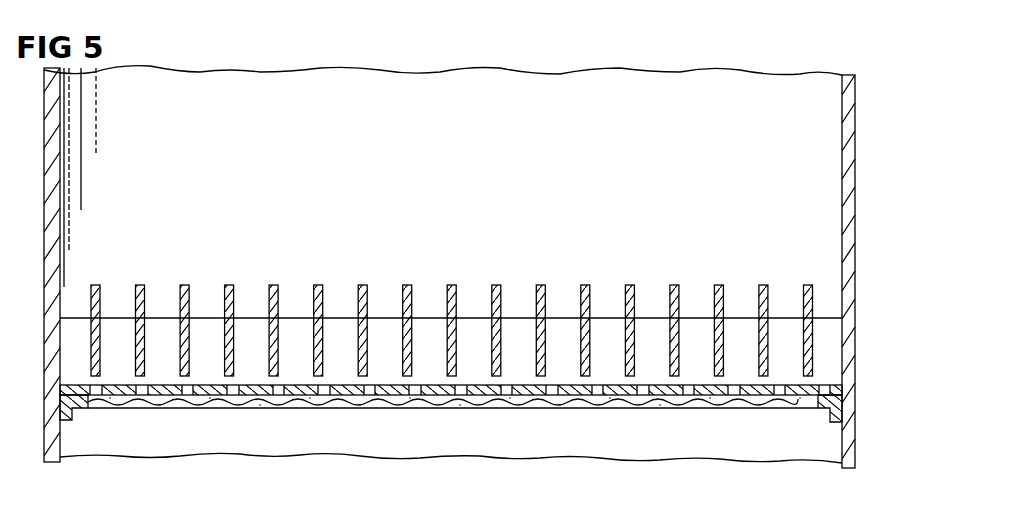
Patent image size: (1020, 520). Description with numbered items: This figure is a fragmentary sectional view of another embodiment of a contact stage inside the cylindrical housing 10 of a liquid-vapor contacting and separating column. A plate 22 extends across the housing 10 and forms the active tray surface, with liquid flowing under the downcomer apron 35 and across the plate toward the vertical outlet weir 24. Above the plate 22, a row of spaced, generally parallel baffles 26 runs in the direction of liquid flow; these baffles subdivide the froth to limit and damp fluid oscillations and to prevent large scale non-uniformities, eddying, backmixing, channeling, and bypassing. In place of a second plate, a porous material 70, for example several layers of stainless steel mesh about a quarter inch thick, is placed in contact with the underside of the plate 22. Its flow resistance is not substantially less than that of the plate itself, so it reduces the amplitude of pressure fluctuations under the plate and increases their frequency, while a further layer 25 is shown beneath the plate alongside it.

The cylindrical housing 10 is at (44, 148).
The plate 22 is at (423, 388).
The vertical outlet weir 24 is at (332, 318).
The porous membrane layer 25 is at (540, 398).
The baffles 26 is at (316, 287).
The downcomer apron 35 is at (293, 440).
The porous material 70 is at (413, 400).